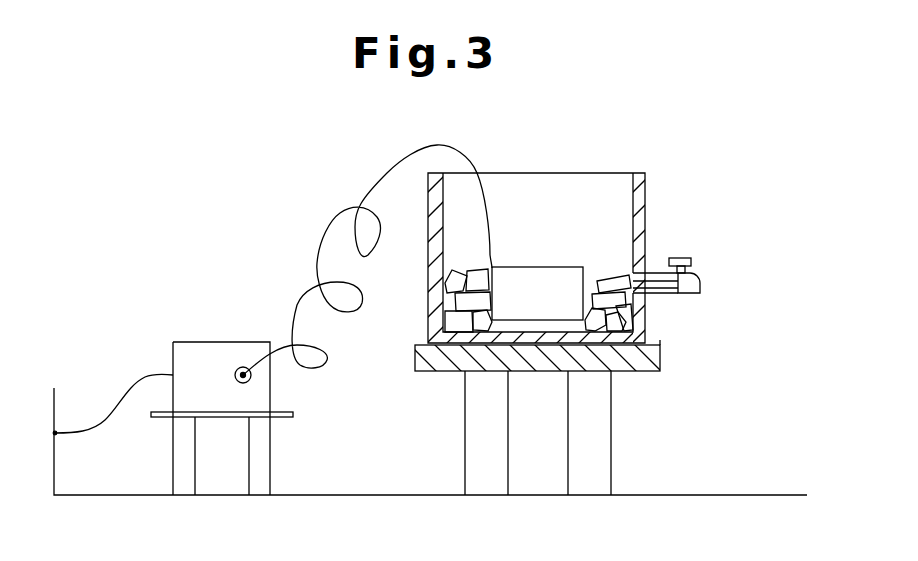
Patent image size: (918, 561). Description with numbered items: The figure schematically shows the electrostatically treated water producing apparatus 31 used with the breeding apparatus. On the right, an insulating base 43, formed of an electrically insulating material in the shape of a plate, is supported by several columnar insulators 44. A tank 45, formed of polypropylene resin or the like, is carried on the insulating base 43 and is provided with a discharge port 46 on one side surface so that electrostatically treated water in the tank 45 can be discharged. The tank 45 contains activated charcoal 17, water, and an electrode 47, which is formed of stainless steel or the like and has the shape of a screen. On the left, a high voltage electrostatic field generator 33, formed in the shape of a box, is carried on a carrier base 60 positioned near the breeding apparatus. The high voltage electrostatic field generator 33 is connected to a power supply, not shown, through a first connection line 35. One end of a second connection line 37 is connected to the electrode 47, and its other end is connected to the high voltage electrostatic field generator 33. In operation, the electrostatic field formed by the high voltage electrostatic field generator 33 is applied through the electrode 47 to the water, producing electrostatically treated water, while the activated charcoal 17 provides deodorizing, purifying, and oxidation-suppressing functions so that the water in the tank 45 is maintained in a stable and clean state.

The electrostatically treated water producing apparatus 31 is at (706, 130).
The tank 45 is at (645, 197).
The insulating base 43 is at (660, 358).
The columnar insulators 44 is at (611, 443).
The electrode 47 is at (543, 276).
The activated charcoal 17 is at (443, 319).
The discharge port 46 is at (693, 294).
The high voltage electrostatic field generator 33 is at (189, 350).
The carrier base 60 is at (270, 455).
The first connection line 35 is at (108, 405).
The second connection line 37 is at (333, 218).